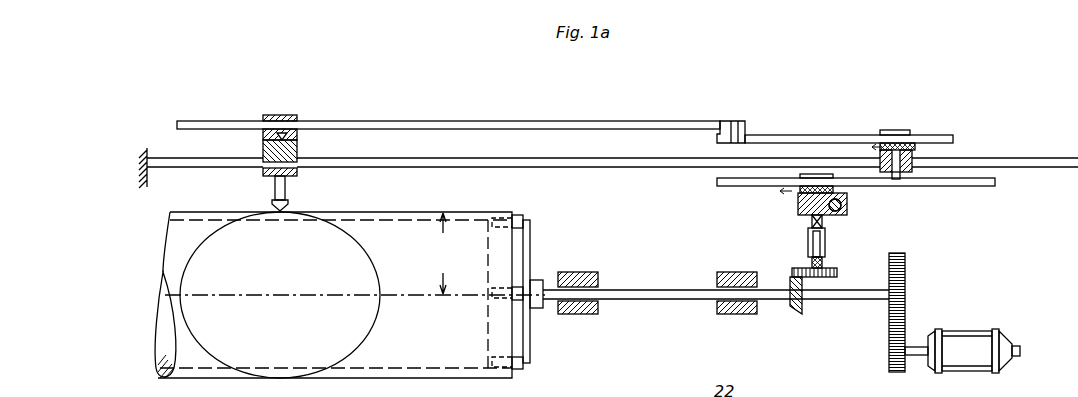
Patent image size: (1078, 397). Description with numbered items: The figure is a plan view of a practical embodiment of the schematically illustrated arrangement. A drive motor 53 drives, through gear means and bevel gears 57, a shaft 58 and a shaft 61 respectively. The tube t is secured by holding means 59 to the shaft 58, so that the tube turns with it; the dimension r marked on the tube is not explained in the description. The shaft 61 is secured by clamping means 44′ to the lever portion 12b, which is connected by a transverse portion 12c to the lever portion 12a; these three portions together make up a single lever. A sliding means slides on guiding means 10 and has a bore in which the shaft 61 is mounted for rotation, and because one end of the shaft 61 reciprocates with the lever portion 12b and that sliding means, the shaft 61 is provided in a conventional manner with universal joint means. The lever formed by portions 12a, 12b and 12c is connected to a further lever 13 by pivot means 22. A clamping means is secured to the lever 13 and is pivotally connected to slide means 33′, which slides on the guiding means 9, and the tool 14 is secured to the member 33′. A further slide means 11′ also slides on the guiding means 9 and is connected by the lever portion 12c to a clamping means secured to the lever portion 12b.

The guiding means 9 is at (1047, 156).
The guiding means 10 is at (846, 206).
The slide means 11′ is at (914, 154).
The lever portion 12a is at (826, 141).
The lever portion 12b is at (858, 187).
The transverse portion 12c is at (902, 178).
The lever 13 is at (642, 124).
The tool 14 is at (270, 198).
The pivot means 22 is at (748, 126).
The slide means 33′ is at (263, 147).
The clamping means 44′ is at (802, 176).
The drive motor 53 is at (978, 338).
The bevel gears 57 is at (795, 302).
The shaft 58 is at (650, 294).
The holding means 59 is at (523, 345).
The shaft 61 is at (808, 267).
The radius r is at (441, 253).
The tube t is at (457, 372).